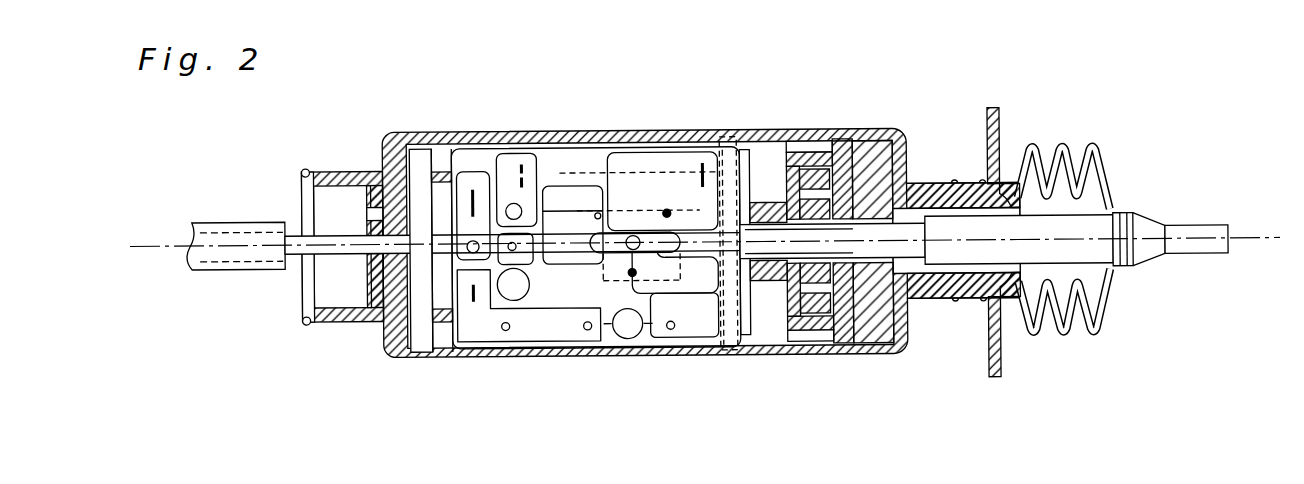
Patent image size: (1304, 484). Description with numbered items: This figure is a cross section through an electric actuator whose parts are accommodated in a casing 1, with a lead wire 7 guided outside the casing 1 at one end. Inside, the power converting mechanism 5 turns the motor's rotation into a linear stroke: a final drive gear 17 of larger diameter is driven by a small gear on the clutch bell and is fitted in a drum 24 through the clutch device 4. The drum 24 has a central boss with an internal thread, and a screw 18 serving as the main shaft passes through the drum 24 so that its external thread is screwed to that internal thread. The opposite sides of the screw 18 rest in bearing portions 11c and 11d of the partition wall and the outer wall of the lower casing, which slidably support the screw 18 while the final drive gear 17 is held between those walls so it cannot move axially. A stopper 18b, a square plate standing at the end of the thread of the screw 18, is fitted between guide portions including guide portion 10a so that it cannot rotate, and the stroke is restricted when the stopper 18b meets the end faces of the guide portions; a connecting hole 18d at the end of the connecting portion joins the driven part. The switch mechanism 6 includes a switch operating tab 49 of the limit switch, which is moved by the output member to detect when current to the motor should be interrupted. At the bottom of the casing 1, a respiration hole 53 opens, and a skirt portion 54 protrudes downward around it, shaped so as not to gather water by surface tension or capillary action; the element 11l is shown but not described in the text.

The casing 1 is at (502, 133).
The clutch device 4 is at (836, 345).
The power converting mechanism 5 is at (912, 252).
The switch mechanism 6 is at (632, 182).
The lead wire 7 is at (237, 270).
The guide portion 10a is at (1025, 182).
The bearing portion 11c is at (742, 270).
The bearing portion 11d is at (860, 273).
The flange 11l is at (973, 272).
The final drive gear 17 is at (845, 150).
The screw 18 is at (1053, 247).
The stopper 18b is at (943, 213).
The connecting hole 18d is at (1193, 233).
The drum 24 is at (760, 323).
The switch operating tab 49 is at (635, 238).
The respiration hole 53 is at (377, 212).
The skirt portion 54 is at (340, 323).